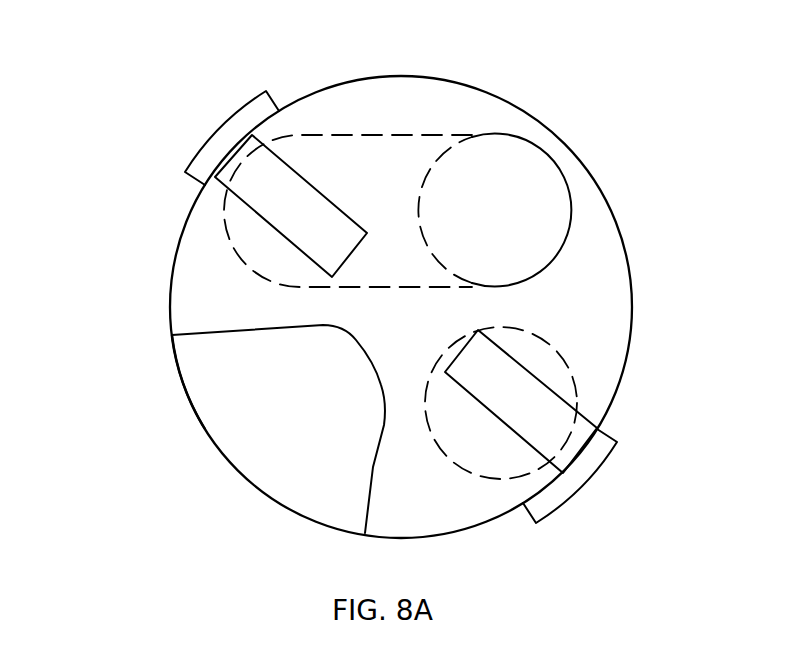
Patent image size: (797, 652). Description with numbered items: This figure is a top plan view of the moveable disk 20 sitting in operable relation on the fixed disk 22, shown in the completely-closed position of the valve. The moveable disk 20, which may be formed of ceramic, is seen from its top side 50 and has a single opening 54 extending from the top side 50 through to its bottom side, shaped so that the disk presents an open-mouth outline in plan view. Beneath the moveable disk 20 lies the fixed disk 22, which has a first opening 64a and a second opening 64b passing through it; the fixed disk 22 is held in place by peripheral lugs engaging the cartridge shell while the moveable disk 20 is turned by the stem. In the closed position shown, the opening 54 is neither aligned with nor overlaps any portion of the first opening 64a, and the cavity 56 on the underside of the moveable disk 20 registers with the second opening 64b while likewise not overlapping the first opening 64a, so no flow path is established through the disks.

The moveable disk 20 is at (171, 307).
The fixed disk 22 is at (188, 395).
The top side 50 is at (210, 268).
The opening 54 is at (365, 358).
The cavity 56 is at (390, 135).
The first opening 64a is at (572, 370).
The second opening 64b is at (428, 237).